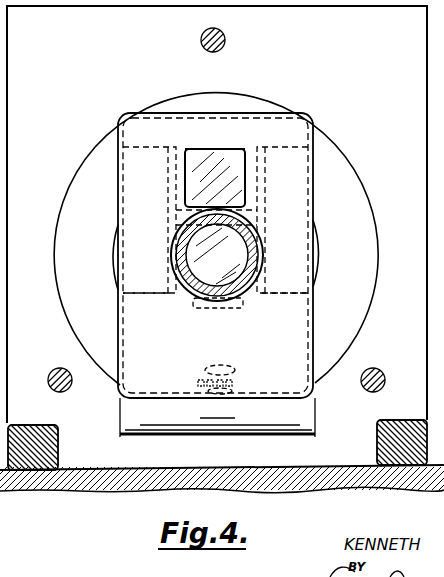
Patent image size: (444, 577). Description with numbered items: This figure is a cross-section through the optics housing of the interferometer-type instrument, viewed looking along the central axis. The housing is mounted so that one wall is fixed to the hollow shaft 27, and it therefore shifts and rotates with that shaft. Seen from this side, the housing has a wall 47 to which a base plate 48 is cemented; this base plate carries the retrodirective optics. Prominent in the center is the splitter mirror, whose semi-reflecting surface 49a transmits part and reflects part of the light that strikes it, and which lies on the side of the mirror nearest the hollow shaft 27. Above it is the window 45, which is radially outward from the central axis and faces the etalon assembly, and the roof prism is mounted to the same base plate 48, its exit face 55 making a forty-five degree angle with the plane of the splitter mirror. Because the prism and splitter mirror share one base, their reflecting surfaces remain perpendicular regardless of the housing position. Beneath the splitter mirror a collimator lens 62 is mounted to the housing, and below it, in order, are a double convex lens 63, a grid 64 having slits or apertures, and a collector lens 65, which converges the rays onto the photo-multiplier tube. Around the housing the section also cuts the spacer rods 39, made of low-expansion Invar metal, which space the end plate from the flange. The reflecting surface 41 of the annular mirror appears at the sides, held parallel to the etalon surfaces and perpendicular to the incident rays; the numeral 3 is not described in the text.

The wall 3 is at (427, 41).
The spacer rods 39 is at (226, 40).
The reflecting surface 41 is at (114, 268).
The window 45 is at (208, 148).
The wall 47 is at (313, 317).
The base plate 48 is at (300, 181).
The exit face 55 is at (215, 178).
The hollow shaft 27 is at (263, 255).
The semi-reflecting surface 49a is at (217, 256).
The collimator lens 62 is at (243, 303).
The double convex lens 63 is at (236, 370).
The grid 64 is at (196, 383).
The collector lens 65 is at (238, 390).